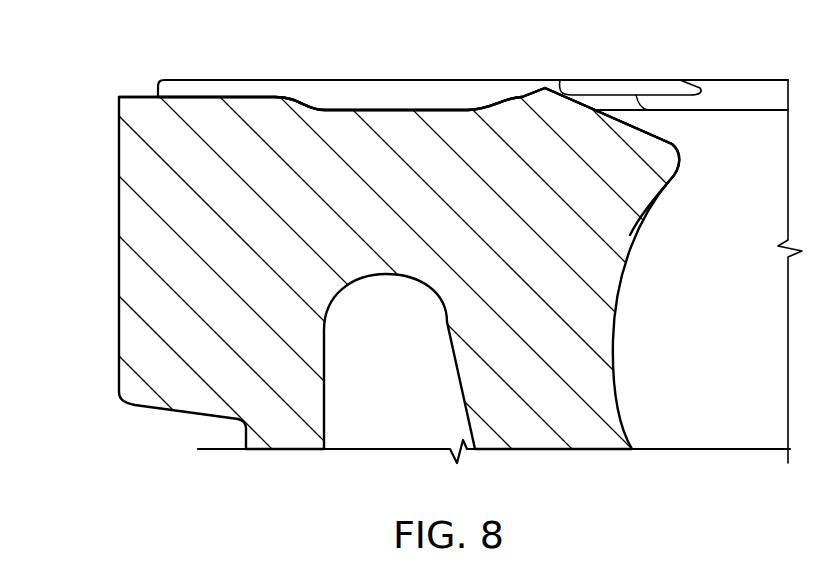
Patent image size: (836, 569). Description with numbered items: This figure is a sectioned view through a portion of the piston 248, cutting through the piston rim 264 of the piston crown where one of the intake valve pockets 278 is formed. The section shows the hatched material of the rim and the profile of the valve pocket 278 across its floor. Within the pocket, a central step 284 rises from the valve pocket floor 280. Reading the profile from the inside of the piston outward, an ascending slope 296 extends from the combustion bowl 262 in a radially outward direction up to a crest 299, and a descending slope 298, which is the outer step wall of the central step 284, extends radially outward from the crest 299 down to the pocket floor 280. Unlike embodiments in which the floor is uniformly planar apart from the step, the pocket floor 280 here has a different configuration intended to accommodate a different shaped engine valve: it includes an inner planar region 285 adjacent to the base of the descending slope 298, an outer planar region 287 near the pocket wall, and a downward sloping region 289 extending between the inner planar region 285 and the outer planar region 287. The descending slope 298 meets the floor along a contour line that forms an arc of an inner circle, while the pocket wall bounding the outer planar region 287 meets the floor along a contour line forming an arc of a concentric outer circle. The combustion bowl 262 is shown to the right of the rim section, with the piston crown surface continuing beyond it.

The piston 248 is at (73, 80).
The combustion bowl 262 is at (740, 289).
The piston rim 264 is at (119, 150).
The valve pocket 278 is at (233, 80).
The valve pocket floor 280 is at (157, 96).
The central step 284 is at (560, 82).
The inner planar region 285 is at (405, 110).
The outer planar region 287 is at (190, 96).
The downward sloping region 289 is at (284, 100).
The ascending slope 296 is at (643, 125).
The descending slope 298 is at (514, 96).
The crest 299 is at (546, 88).